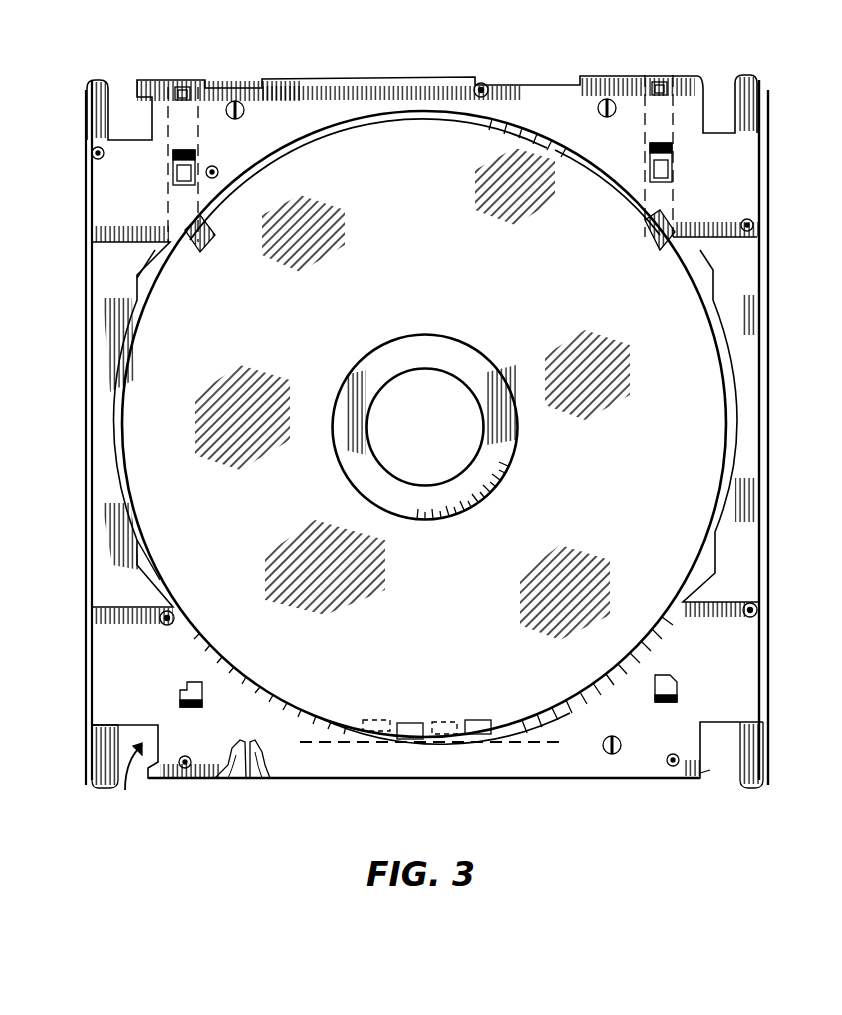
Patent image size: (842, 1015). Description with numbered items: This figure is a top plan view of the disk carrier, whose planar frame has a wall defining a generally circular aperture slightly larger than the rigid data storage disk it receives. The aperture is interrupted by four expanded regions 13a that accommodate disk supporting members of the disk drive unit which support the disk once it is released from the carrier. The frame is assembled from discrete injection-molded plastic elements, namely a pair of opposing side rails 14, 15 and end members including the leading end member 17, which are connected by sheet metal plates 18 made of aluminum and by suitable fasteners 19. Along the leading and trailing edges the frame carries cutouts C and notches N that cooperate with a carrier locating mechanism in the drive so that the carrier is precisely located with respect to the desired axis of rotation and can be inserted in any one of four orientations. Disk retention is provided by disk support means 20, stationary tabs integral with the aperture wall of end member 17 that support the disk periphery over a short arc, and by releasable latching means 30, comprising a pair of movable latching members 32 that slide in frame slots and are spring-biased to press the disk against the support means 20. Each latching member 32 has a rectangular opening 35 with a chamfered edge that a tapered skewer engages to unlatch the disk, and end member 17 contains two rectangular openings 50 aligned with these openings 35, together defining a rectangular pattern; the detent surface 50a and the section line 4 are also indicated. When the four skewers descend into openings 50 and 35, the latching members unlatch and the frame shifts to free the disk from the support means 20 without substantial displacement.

The expanded regions 13a is at (150, 268).
The side rail 14 is at (88, 400).
The side rail 15 is at (745, 552).
The end member 17 is at (705, 772).
The sheet metal plates 18 is at (285, 137).
The fasteners 19 is at (175, 615).
The disk support means 20 is at (405, 722).
The releasable latching means 30 is at (186, 74).
The latching member 32 is at (210, 243).
The rectangular opening 35 is at (173, 172).
The rectangular openings 50 is at (180, 690).
The detent surface 50a is at (192, 706).
The section line 4- 4 is at (427, 717).
The cutouts C is at (143, 818).
The notches N is at (246, 780).